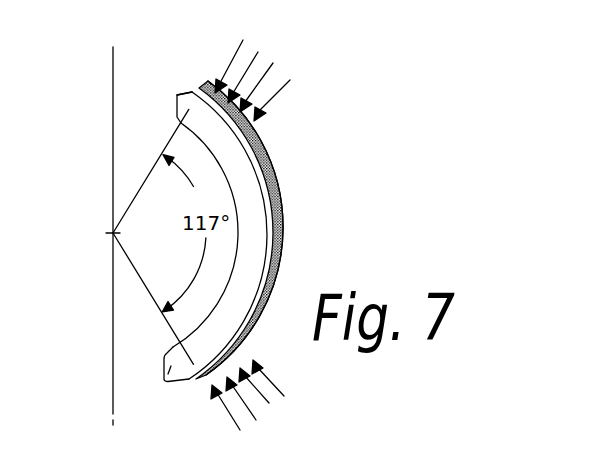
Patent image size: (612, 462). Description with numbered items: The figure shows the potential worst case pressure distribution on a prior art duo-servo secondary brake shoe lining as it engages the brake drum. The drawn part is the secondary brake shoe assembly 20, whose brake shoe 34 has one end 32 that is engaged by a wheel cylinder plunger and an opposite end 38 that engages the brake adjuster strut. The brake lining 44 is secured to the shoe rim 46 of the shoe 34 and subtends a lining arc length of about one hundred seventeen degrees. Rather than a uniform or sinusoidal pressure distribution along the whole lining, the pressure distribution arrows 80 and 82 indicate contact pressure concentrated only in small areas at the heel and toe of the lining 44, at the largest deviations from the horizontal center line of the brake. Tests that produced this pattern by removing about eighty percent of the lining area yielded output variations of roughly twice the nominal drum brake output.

The secondary brake shoe assembly 20 is at (162, 109).
The end of the brake shoe 32 is at (177, 95).
The brake shoe 34 is at (204, 120).
The end of the brake shoe 38 is at (164, 382).
The brake lining 44 is at (282, 188).
The shoe rim 46 is at (275, 223).
The pressure distribution arrows 80 is at (268, 68).
The pressure distribution arrows 82 is at (268, 400).